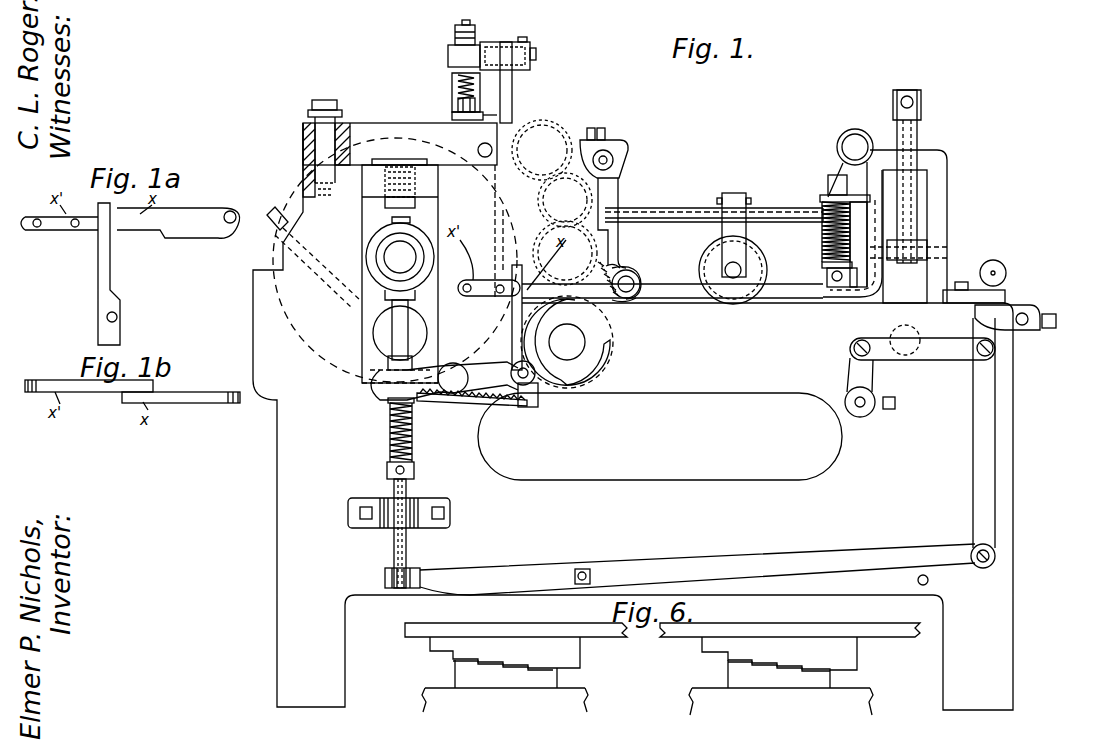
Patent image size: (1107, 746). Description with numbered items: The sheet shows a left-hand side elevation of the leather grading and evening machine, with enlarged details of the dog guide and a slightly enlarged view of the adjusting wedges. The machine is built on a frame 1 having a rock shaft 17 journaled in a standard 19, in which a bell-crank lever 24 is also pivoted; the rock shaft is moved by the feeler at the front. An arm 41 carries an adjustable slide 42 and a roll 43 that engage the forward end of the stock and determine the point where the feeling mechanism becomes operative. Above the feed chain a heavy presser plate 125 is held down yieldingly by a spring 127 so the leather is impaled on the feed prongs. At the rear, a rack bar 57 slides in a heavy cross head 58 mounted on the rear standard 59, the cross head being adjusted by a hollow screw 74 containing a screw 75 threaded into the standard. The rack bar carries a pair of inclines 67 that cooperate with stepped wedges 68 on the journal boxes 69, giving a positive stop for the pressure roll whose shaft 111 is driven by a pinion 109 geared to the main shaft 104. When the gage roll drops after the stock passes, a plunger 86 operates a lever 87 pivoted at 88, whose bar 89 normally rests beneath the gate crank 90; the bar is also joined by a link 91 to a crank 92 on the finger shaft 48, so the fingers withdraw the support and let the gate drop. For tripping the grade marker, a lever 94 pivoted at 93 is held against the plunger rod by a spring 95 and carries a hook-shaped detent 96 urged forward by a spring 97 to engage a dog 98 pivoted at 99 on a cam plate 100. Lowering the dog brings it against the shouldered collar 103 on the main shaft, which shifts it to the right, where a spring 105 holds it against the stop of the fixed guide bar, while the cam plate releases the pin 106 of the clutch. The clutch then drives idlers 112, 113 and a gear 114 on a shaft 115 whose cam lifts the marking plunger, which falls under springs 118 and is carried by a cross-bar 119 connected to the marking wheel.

In FIG. 1, the frame 1 is at (277, 660).
In FIG. 1, the rock shaft 17 is at (850, 142).
In FIG. 1, the standard 19 is at (940, 164).
In FIG. 1, the bell-crank lever 24 is at (917, 130).
In FIG. 1, the arm 41 is at (797, 230).
In FIG. 1, the adjustable slide 42 is at (736, 192).
In FIG. 1, the roll 43 is at (725, 288).
In FIG. 1, the shaft 48 is at (862, 408).
In FIG. 6, the rack bar 57 is at (893, 637).
In FIG. 1, the cross head 58 is at (372, 122).
In FIG. 1, the rear standard 59 is at (253, 266).
In FIG. 6, the inclines 67 is at (573, 650).
In FIG. 6, the stepped inclines or wedges 68 is at (550, 678).
In FIG. 6, the journal boxes 69 is at (860, 705).
In FIG. 1, the hollow screw 74 is at (305, 115).
In FIG. 1, the screw 75 is at (323, 97).
In FIG. 1, the plunger 86 is at (394, 553).
In FIG. 1, the lever 87 is at (496, 572).
In FIG. 1, the pivot 88 is at (586, 569).
In FIG. 1, the bar 89 is at (985, 452).
In FIG. 1, the crank 90 is at (1002, 326).
In FIG. 1, the link 91 is at (947, 352).
In FIG. 1, the crank 92 is at (850, 360).
In FIG. 1, the pivot 93 is at (484, 404).
In FIG. 1, the lever 94 is at (538, 392).
In FIG. 1, the spring 95 is at (390, 440).
In FIG. 1, the hook-shaped detent 96 is at (537, 400).
In FIG. 1A, the hook-shaped detent 96 is at (110, 297).
In FIG. 1, the spring 97 is at (446, 402).
In FIG. 1, the dog 98 is at (624, 302).
In FIG. 1A, the dog 98 is at (193, 231).
In FIG. 1B, the dog 98 is at (195, 403).
In FIG. 1, the pivot 99 is at (641, 277).
In FIG. 1, the cam plate 100 is at (640, 208).
In FIG. 1, the shouldered collar 103 is at (606, 340).
In FIG. 1, the main shaft 104 is at (578, 348).
In FIG. 1, the spring 105 is at (615, 266).
In FIG. 1, the pin 106 is at (626, 268).
In FIG. 1, the pinion 109 is at (612, 218).
In FIG. 1, the shaft 111 is at (390, 260).
In FIG. 1, the idler 112 is at (612, 190).
In FIG. 1, the idler 113 is at (585, 137).
In FIG. 1, the gear 114 is at (525, 140).
In FIG. 1, the shaft 115 is at (503, 150).
In FIG. 1, the springs 118 is at (452, 82).
In FIG. 1, the cross-bar 119 is at (448, 52).
In FIG. 1, the presser plate 125 is at (806, 300).
In FIG. 1, the spring 127 is at (830, 200).